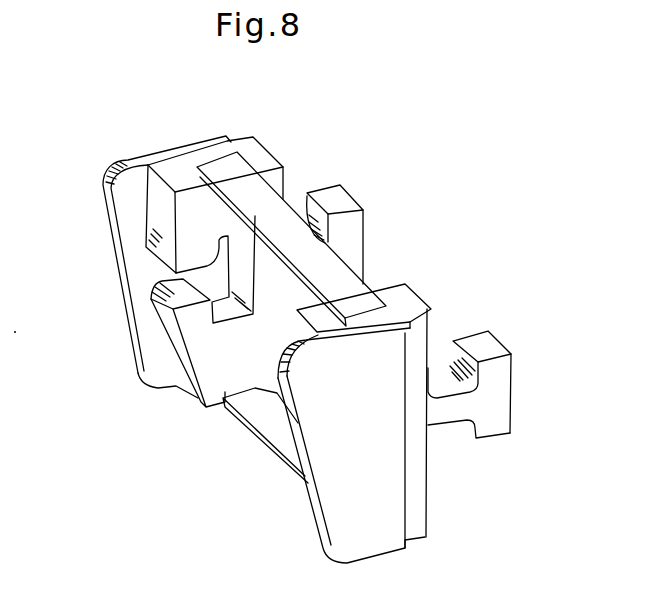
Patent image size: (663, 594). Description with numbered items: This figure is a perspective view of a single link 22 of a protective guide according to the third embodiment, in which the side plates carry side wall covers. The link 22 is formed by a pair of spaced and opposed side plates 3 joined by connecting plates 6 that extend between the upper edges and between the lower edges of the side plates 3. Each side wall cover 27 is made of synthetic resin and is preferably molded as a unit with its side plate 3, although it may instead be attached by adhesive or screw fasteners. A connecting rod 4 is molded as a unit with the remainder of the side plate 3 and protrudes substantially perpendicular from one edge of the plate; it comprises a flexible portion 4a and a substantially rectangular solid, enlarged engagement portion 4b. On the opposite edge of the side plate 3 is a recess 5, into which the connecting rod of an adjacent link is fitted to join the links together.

The link 22 is at (312, 156).
The side wall cover 27 is at (125, 165).
The side plate 3 is at (253, 147).
The connecting plate 6 is at (330, 267).
The recess 5 is at (227, 307).
The connecting rod 4 is at (573, 512).
The flexible portion 4a is at (443, 413).
The engagement portion 4b is at (500, 417).